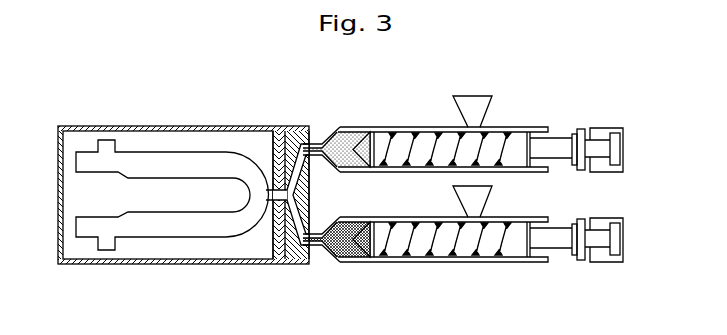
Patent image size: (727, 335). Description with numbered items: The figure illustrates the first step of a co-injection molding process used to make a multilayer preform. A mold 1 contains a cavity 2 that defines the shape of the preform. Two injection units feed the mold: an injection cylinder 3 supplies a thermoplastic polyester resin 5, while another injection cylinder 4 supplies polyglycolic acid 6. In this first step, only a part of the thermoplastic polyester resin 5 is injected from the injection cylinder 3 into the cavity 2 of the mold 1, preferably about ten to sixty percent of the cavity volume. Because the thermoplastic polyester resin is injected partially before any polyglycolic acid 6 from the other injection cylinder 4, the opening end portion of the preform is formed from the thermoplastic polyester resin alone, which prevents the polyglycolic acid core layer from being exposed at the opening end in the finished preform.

The mold 1 is at (182, 127).
The cavity 2 is at (187, 227).
The injection cylinder 3 is at (507, 128).
The another injection cylinder 4 is at (512, 262).
The thermoplastic polyester resin 5 is at (343, 140).
The polyglycolic acid 6 is at (352, 257).